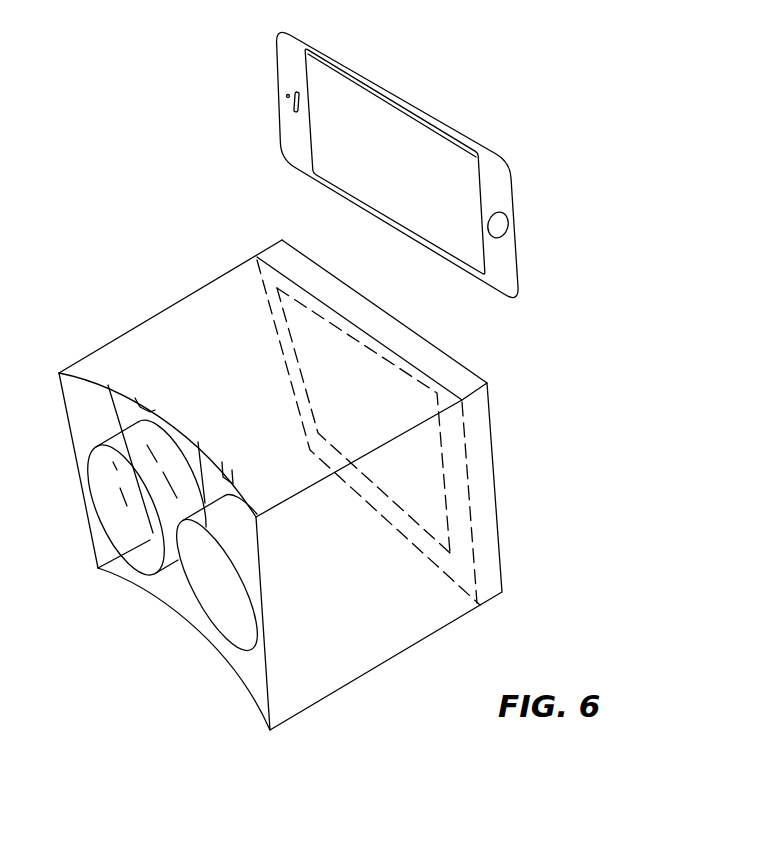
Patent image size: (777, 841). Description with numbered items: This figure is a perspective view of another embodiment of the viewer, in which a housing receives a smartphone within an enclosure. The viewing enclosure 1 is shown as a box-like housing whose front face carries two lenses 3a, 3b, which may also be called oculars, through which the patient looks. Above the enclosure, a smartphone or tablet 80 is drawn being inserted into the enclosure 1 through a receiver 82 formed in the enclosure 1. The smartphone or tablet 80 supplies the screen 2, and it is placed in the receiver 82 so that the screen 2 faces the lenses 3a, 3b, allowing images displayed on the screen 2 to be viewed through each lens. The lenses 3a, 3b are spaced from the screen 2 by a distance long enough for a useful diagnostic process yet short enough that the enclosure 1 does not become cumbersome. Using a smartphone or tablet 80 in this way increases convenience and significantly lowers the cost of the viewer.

The viewing enclosure 1 is at (131, 290).
The screen 2 is at (410, 145).
The lens 3a is at (93, 517).
The lens 3b is at (208, 623).
The smartphone or tablet 80 is at (465, 135).
The receiver 82 is at (450, 368).